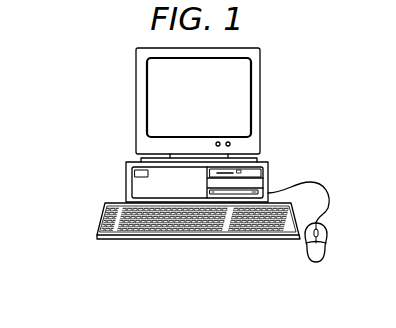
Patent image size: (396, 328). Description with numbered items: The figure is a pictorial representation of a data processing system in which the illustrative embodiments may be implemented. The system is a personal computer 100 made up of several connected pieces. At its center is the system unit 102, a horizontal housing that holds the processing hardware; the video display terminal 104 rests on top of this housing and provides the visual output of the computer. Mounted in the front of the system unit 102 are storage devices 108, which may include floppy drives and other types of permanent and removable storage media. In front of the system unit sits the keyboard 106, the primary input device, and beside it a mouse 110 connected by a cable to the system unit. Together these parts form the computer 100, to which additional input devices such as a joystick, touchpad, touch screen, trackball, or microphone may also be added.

The computer 100 is at (82, 91).
The system unit 102 is at (126, 180).
The video display terminal 104 is at (260, 103).
The keyboard 106 is at (122, 240).
The storage devices 108 is at (250, 173).
The mouse 110 is at (316, 262).